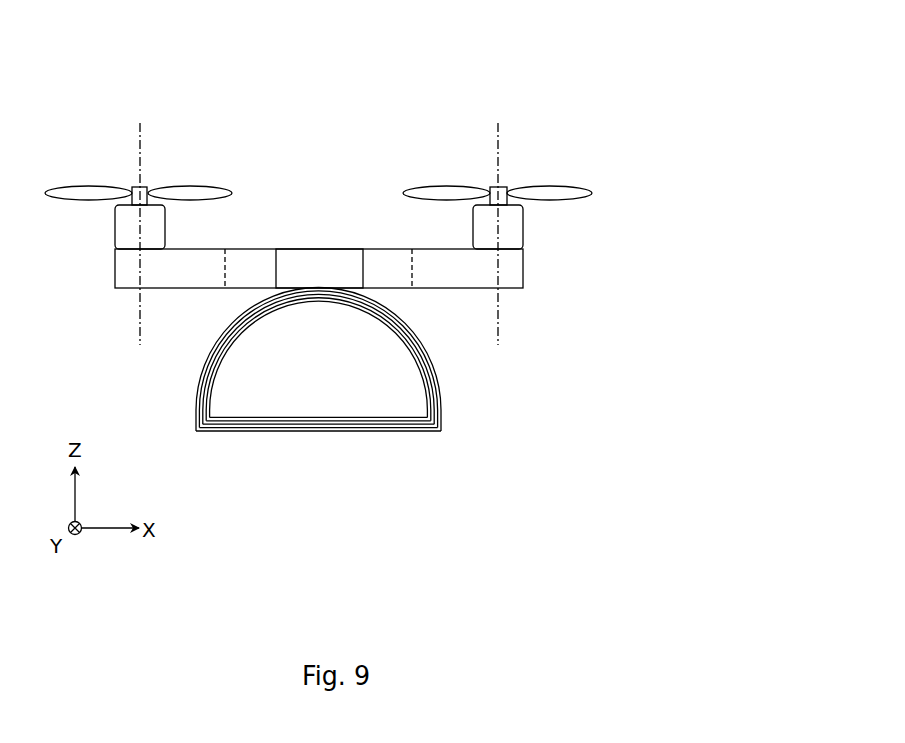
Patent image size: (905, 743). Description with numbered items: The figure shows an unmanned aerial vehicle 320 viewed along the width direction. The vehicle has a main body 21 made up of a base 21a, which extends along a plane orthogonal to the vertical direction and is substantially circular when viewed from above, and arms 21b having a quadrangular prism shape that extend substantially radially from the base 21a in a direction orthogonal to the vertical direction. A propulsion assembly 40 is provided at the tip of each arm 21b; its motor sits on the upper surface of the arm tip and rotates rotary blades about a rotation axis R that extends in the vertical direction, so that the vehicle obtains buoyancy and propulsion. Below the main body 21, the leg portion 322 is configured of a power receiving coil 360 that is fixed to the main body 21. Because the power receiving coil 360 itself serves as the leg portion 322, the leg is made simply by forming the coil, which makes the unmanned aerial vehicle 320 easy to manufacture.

The unmanned aerial vehicle 320 is at (447, 83).
The propulsion assembly 40 is at (204, 172).
The rotation axis R is at (142, 140).
The main body 21 is at (306, 215).
The base 21a is at (318, 264).
The arm 21b is at (200, 263).
The power receiving coil 360 is at (438, 377).
The leg portion 322 is at (425, 436).